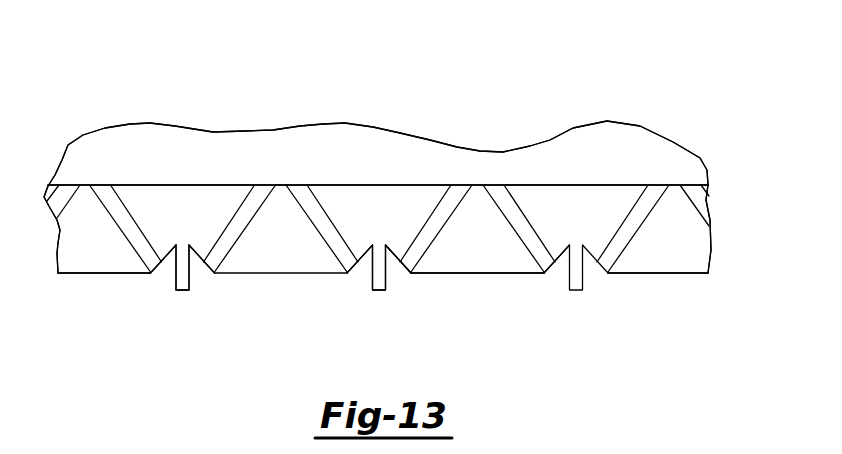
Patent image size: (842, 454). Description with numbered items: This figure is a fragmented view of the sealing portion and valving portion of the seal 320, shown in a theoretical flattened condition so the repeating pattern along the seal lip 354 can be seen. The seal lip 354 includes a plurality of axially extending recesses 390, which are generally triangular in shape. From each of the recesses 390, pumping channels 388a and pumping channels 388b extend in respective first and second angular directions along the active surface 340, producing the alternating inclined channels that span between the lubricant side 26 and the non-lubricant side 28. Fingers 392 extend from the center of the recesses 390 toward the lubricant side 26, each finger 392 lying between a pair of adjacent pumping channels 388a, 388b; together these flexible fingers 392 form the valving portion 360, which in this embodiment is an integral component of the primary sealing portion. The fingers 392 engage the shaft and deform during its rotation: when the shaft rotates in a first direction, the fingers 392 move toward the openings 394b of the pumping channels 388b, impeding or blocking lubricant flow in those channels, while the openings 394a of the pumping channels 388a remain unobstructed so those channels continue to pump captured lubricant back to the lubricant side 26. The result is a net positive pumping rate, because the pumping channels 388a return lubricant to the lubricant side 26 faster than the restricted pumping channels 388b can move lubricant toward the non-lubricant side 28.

The seal 320 is at (603, 60).
The non-lubricant side 28 is at (508, 123).
The lubricant side 26 is at (592, 350).
The seal lip 354 is at (95, 274).
The active surface 340 is at (687, 258).
The pumping channels 388b is at (122, 212).
The pumping channels 388a is at (247, 206).
The openings 394b is at (152, 268).
The fingers 392 is at (182, 290).
The openings 394a is at (215, 268).
The valving portion 360 is at (380, 290).
The recesses 390 is at (560, 268).